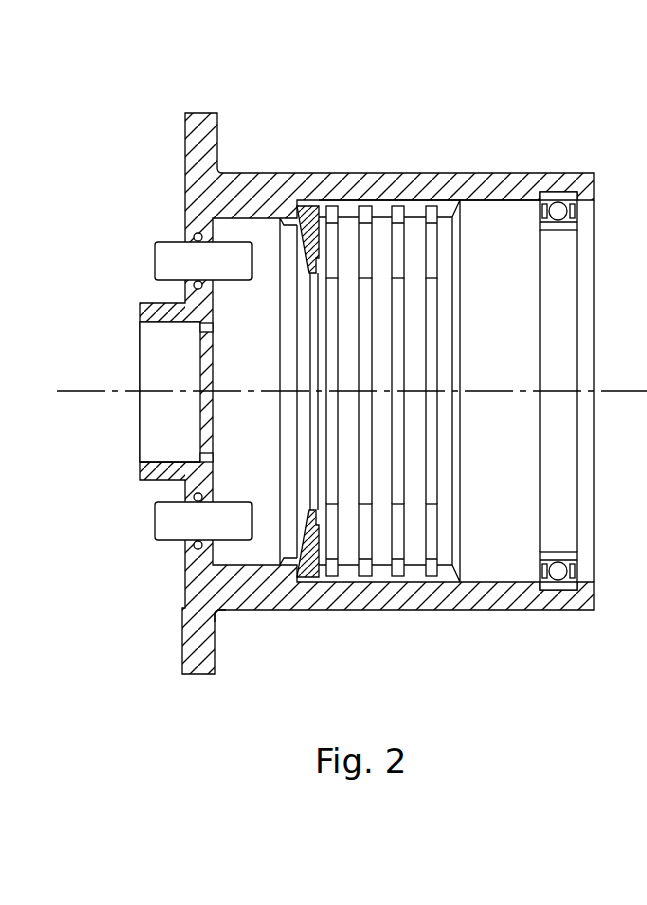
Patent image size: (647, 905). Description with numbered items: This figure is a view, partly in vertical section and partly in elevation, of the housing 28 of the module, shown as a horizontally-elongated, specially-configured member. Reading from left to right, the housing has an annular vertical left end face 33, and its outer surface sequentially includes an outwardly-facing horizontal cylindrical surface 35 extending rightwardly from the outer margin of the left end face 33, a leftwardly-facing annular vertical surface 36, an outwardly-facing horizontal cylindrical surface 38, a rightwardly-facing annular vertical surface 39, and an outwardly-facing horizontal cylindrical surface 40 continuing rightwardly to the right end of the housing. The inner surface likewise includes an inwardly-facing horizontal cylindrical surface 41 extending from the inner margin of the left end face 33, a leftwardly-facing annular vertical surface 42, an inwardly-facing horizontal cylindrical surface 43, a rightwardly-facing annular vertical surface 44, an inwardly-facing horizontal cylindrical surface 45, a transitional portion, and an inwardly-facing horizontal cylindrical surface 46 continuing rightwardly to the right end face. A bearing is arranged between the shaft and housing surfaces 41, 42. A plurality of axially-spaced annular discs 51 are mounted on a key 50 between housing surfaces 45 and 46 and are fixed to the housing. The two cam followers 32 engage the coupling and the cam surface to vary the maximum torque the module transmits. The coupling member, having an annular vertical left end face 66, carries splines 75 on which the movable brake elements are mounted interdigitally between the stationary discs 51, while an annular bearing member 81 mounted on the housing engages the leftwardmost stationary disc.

The housing 28 is at (424, 124).
The cam followers 32 is at (173, 244).
The annular vertical left end face 33 is at (137, 312).
The outwardly-facing horizontal cylindrical surface 35 is at (152, 484).
The leftwardly-facing annular vertical surface 36 is at (182, 588).
The outwardly-facing horizontal cylindrical surface 38 is at (191, 679).
The rightwardly-facing annular vertical surface 39 is at (222, 643).
The outwardly-facing horizontal cylindrical surface 40 is at (386, 613).
The inwardly-facing horizontal cylindrical surface 41 is at (170, 324).
The leftwardly-facing annular vertical surface 42 is at (192, 454).
The inwardly-facing horizontal cylindrical surface 43 is at (208, 337).
The rightwardly-facing annular vertical surface 44 is at (218, 298).
The inwardly-facing horizontal cylindrical surface 45 is at (259, 559).
The inwardly-facing horizontal cylindrical surface 46 is at (483, 208).
The key 50 is at (453, 556).
The annular discs 51 is at (374, 500).
The annular vertical left end face 66 is at (352, 372).
The splines 75 is at (646, 157).
The annular bearing member 81 is at (305, 277).